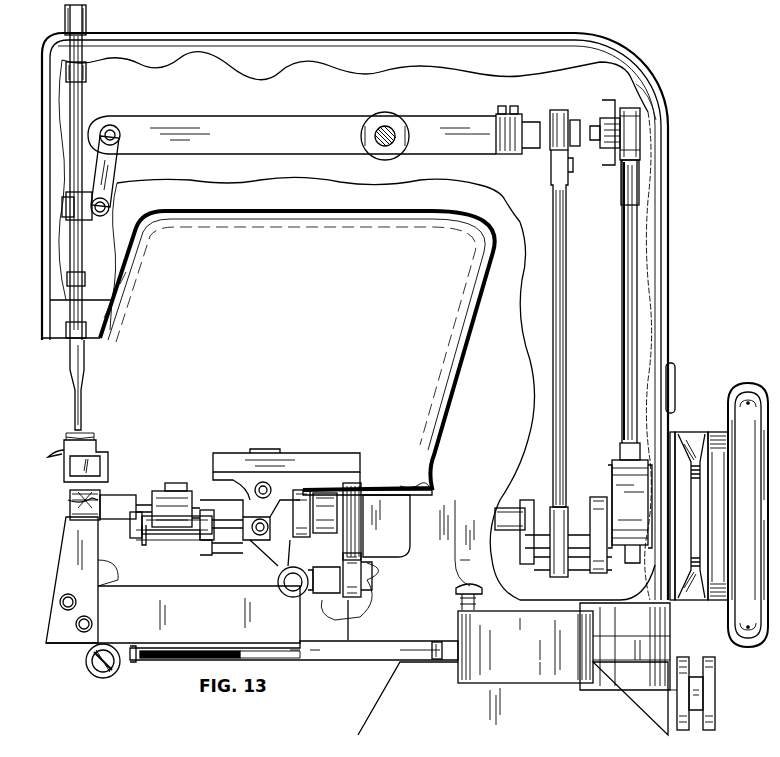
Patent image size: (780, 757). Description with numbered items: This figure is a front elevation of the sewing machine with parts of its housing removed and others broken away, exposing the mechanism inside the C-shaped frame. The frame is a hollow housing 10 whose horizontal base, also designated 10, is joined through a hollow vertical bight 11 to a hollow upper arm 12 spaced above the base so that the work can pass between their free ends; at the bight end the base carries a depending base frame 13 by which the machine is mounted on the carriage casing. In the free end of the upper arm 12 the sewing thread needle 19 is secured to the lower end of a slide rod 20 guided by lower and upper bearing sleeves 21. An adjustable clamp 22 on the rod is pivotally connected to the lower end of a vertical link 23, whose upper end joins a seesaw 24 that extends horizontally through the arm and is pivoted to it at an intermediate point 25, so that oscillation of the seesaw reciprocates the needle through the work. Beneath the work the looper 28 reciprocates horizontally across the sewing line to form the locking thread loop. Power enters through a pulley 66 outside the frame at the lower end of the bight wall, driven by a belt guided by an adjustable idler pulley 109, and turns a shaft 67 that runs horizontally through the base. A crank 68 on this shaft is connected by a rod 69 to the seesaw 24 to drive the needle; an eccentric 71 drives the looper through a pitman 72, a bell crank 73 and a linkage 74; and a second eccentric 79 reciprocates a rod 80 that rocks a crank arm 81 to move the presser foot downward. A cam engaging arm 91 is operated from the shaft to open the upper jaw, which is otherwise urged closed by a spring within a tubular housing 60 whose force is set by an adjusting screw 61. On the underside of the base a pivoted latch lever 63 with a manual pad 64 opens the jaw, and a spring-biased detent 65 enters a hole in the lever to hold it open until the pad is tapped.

The hollow housing / base 10 is at (137, 616).
The bight 11 is at (666, 285).
The upper arm 12 is at (274, 48).
The base frame 13 is at (556, 716).
The sewing thread needle 19 is at (82, 396).
The slide rod 20 is at (82, 250).
The bearing sleeves 21 is at (66, 20).
The adjustable clamp 22 is at (647, 95).
The link 23 is at (113, 176).
The seesaw 24 is at (225, 119).
The pivot 25 is at (393, 128).
The looper 28 is at (106, 457).
The tubular housing 60 is at (113, 674).
The adjusting screw 61 is at (96, 672).
The latch lever 63 is at (351, 656).
The pad 64 is at (537, 657).
The detent 65 is at (465, 587).
The pulley 66 is at (694, 458).
The shaft 67 is at (145, 500).
The crank 68 is at (581, 540).
The rod 69 is at (563, 363).
The eccentric 71 is at (358, 490).
The pitman 72 is at (358, 560).
The bell crank 73 is at (272, 556).
The linkage 74 is at (147, 530).
The eccentric 79 is at (642, 513).
The rod 80 is at (622, 278).
The crank arm 81 is at (607, 161).
The cam engaging arm 91 is at (187, 485).
The adjustable idler pulley 109 is at (713, 687).